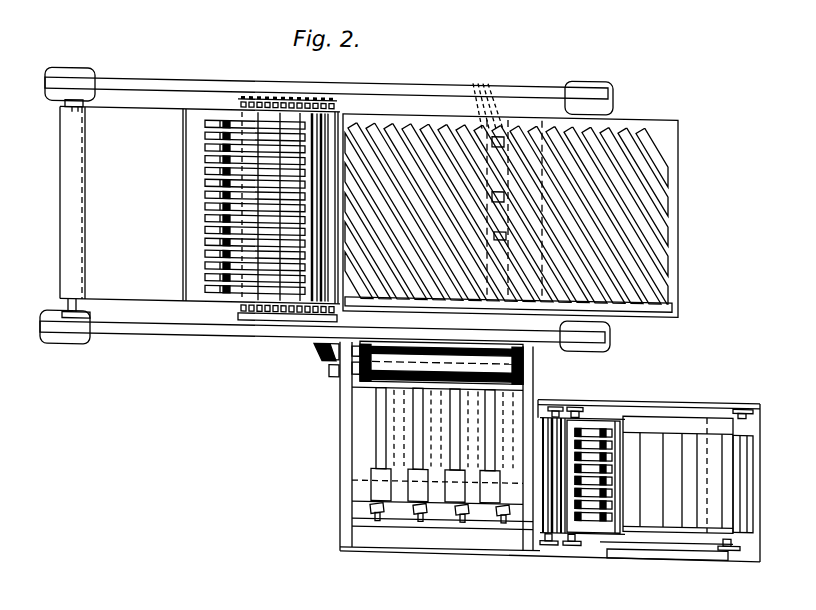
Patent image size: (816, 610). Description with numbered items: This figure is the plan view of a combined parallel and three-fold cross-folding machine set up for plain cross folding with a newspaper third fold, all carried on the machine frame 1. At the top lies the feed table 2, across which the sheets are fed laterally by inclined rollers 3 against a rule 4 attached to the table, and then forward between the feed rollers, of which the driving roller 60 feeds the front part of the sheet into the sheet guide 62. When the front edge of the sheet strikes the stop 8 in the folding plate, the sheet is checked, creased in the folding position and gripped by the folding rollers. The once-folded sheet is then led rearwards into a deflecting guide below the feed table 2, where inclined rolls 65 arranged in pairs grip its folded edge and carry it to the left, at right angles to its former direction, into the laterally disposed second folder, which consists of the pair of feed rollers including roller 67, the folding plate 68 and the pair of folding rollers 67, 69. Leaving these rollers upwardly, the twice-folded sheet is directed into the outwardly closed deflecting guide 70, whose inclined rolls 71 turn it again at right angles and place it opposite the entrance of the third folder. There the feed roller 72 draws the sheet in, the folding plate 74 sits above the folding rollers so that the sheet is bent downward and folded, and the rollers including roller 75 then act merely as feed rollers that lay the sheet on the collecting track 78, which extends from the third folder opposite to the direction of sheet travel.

The machine frame 1 is at (197, 90).
The feed table 2 is at (645, 125).
The inclined rollers 3 is at (662, 292).
The rule 4 is at (668, 308).
The stop 8 is at (205, 233).
The feed roller 60 is at (340, 118).
The sheet guide 62 is at (195, 172).
The inclined rolls 65 is at (505, 179).
The feed and folding roller 67 is at (527, 350).
The folding plate 68 is at (397, 453).
The folding roller 69 is at (372, 388).
The deflecting guide 70 is at (402, 512).
The inclined rolls 71 is at (498, 518).
The feed roller 72 is at (572, 406).
The folding plate 74 is at (620, 424).
The folding roller 75 is at (588, 505).
The collecting track 78 is at (680, 399).